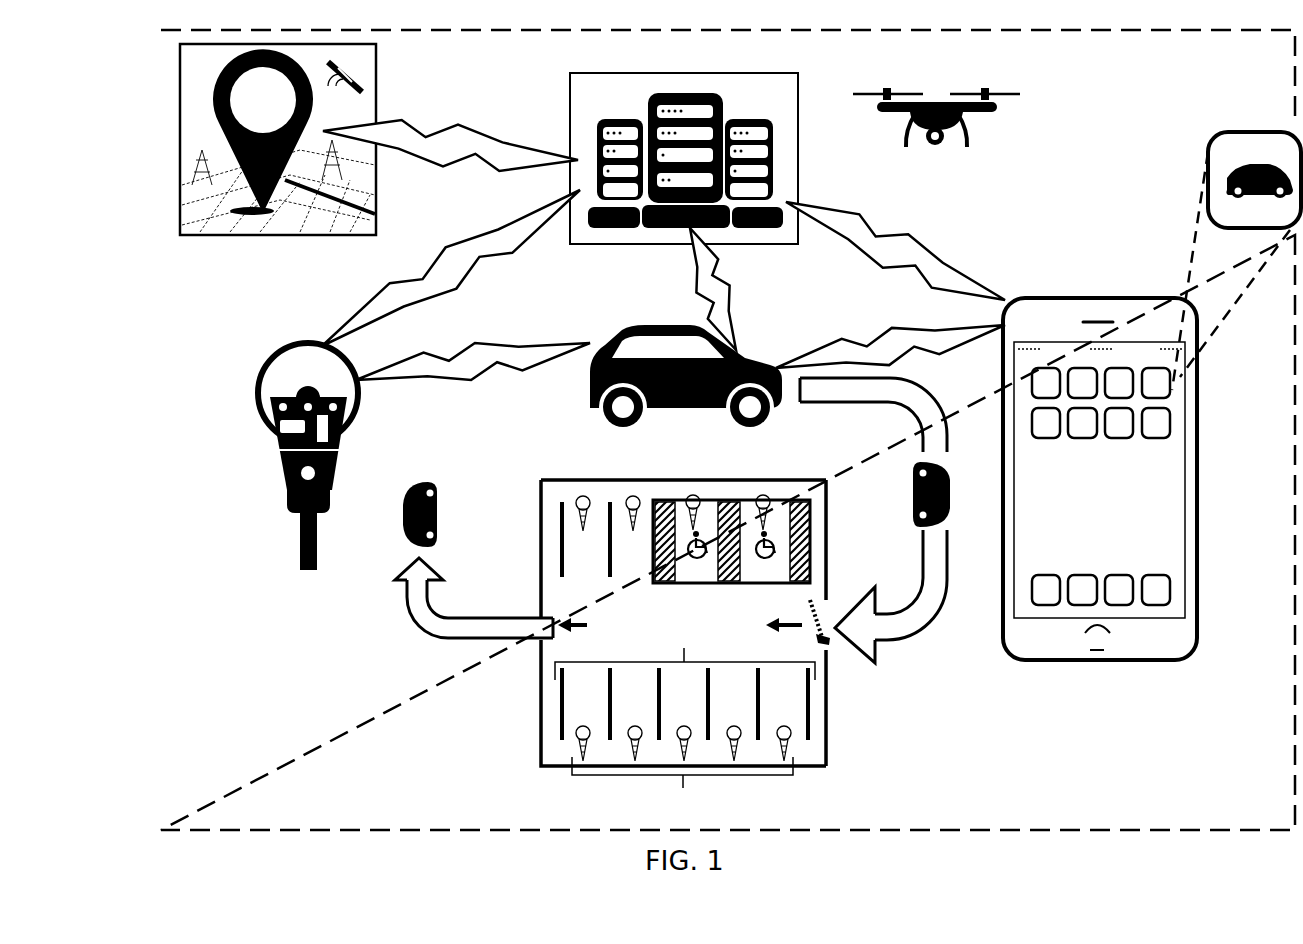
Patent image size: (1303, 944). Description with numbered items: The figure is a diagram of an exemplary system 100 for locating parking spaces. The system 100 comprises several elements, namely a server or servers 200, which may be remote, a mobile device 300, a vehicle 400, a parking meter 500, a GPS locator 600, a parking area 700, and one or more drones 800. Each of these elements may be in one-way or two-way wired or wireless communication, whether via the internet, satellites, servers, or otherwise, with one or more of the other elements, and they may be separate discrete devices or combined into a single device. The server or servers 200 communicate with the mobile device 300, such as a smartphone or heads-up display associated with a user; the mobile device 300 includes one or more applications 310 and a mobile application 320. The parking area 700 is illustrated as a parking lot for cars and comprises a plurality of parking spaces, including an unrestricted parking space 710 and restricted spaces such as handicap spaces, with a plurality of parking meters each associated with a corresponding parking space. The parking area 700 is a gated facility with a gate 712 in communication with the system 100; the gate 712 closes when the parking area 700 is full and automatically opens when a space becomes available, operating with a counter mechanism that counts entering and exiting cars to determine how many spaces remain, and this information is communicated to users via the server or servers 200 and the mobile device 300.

The system 100 is at (148, 400).
The server 200 is at (767, 120).
The mobile device 300 is at (1100, 410).
The applications 310 is at (1046, 440).
The mobile application 320 is at (1227, 157).
The vehicle 400 is at (565, 382).
The parking meter 500 is at (280, 472).
The GPS locator 600 is at (262, 214).
The parking area 700 is at (644, 630).
The parking space 710 is at (780, 697).
The gate 712 is at (826, 642).
The drone 800 is at (928, 101).